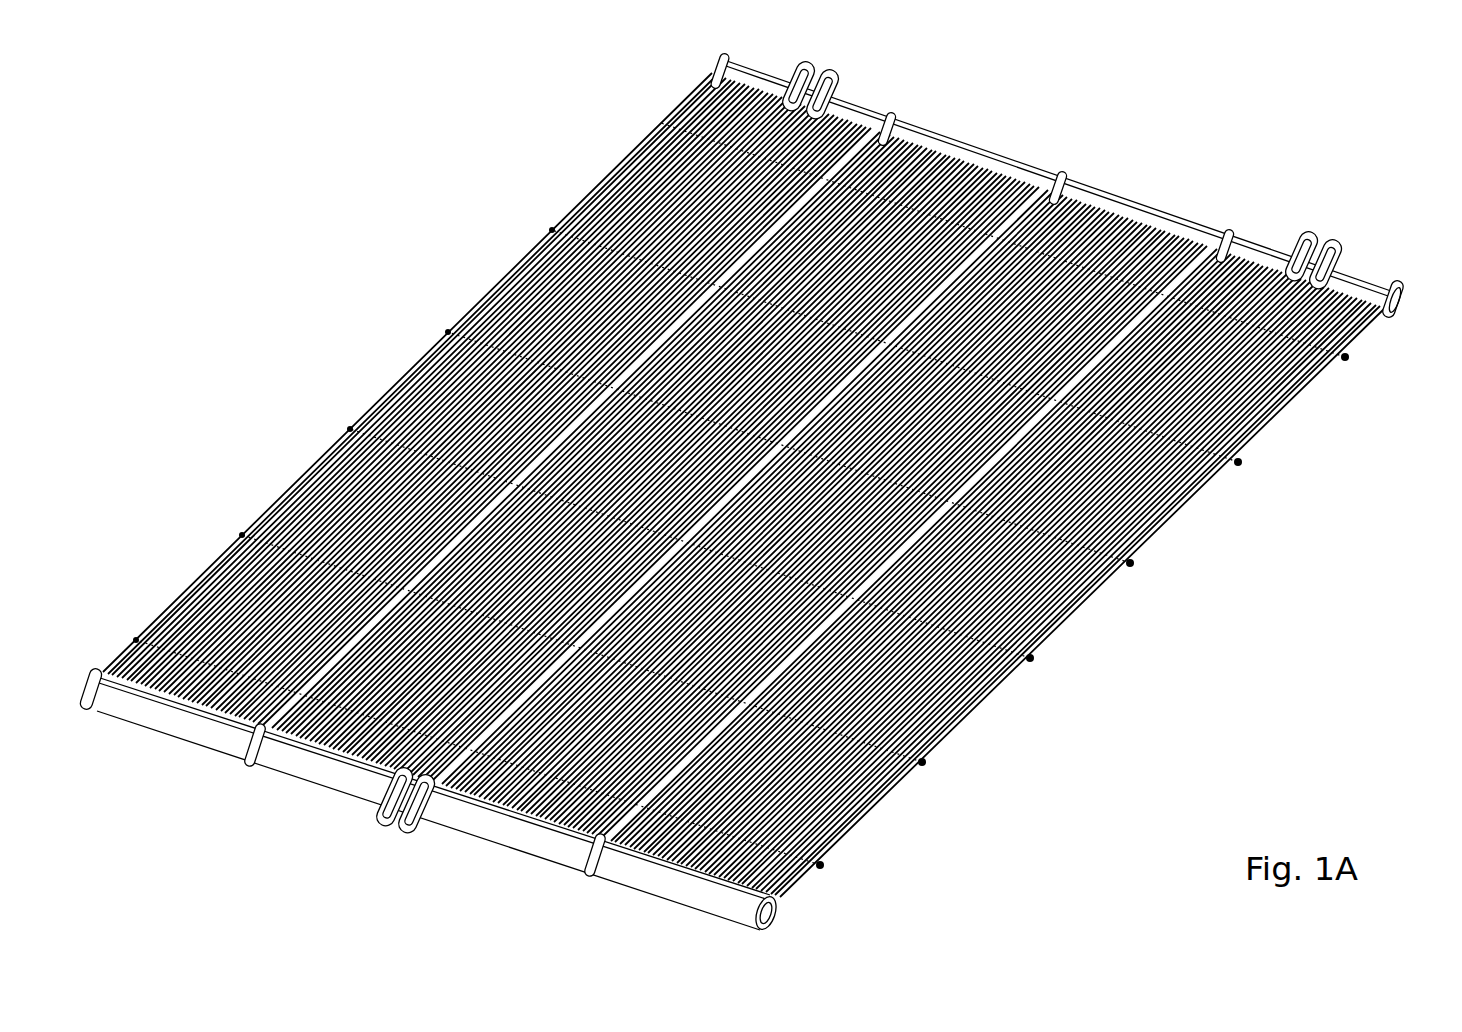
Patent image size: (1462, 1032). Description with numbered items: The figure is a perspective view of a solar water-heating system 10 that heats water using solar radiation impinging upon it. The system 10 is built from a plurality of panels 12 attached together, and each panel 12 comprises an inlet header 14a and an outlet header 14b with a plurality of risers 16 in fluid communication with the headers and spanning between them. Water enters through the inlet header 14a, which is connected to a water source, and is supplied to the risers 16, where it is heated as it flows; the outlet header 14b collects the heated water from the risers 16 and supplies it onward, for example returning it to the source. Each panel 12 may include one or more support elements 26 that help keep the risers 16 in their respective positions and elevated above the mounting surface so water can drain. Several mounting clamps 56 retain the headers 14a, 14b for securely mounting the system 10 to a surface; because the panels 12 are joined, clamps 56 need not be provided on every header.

The system 10 is at (380, 236).
The panel 12 is at (853, 97).
The inlet header 14a is at (300, 765).
The outlet header 14b is at (976, 156).
The riser 16 is at (1003, 682).
The support element 26 is at (1345, 361).
The mounting clamp 56 is at (806, 60).